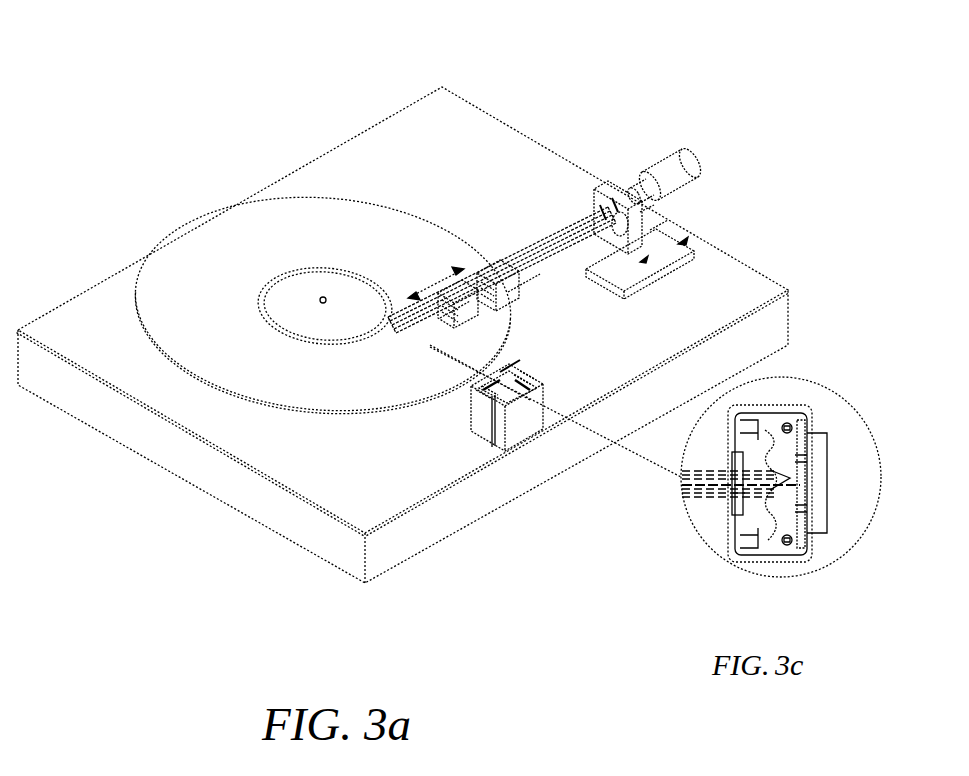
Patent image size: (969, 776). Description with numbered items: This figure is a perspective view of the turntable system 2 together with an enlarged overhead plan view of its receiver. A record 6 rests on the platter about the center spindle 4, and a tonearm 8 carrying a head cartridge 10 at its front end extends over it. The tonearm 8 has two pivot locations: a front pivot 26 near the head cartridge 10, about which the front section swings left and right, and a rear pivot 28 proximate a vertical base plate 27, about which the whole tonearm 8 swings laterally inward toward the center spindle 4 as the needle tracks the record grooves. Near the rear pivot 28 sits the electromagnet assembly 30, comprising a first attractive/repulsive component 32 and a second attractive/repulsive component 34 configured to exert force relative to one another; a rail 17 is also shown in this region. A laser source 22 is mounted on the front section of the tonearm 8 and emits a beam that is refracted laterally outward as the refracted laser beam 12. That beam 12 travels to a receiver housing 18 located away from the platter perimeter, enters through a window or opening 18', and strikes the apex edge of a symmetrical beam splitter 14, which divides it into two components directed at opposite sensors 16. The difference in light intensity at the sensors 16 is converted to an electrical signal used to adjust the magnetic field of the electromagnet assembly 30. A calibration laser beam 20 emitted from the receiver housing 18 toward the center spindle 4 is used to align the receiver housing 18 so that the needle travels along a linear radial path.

In FIG. 3a, the turntable system 2 is at (205, 184).
In FIG. 3a, the center spindle 4 is at (323, 300).
In FIG. 3a, the record 6 is at (196, 263).
In FIG. 3a, the tonearm 8 is at (520, 280).
In FIG. 3a, the head cartridge 10 is at (413, 293).
In FIG. 3a, the refracted laser beam 12 is at (482, 368).
In FIG. 3c, the refracted laser beam 12 is at (713, 470).
In FIG. 3c, the beam splitter 14 is at (780, 477).
In FIG. 3c, the sensors 16 is at (772, 542).
In FIG. 3a, the rail 17 is at (503, 289).
In FIG. 3a, the receiver housing 18 is at (356, 439).
In FIG. 3c, the receiver housing 18 is at (799, 503).
In FIG. 3c, the window or opening 18' is at (654, 525).
In FIG. 3a, the calibration laser beam 20 is at (497, 333).
In FIG. 3a, the laser source 22 is at (477, 273).
In FIG. 3a, the front pivot 26 is at (463, 306).
In FIG. 3a, the vertical base plate 27 is at (647, 247).
In FIG. 3a, the rear pivot 28 is at (608, 217).
In FIG. 3a, the electromagnet assembly 30 is at (670, 216).
In FIG. 3a, the first attractive/repulsive component 32 is at (657, 223).
In FIG. 3a, the second attractive/repulsive component 34 is at (632, 233).